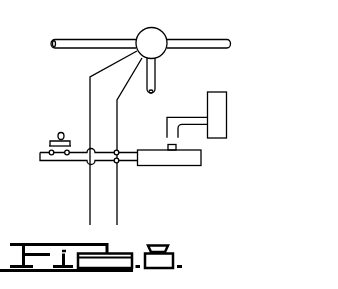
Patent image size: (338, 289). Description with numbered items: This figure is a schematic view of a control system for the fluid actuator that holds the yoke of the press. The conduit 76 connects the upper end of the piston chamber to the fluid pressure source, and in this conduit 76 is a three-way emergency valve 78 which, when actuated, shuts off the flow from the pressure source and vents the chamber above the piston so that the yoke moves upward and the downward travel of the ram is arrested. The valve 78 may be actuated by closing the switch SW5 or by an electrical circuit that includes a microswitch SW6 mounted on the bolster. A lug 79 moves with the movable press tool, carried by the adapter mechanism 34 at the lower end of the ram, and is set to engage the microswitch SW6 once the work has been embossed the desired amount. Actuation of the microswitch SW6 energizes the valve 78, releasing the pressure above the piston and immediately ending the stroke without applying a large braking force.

The three-way emergency valve 78 is at (152, 32).
The conduit 76 is at (155, 79).
The lug 79 is at (167, 118).
The adapter mechanism 34 is at (220, 93).
The switch SW5 is at (85, 141).
The microswitch SW6 is at (160, 166).